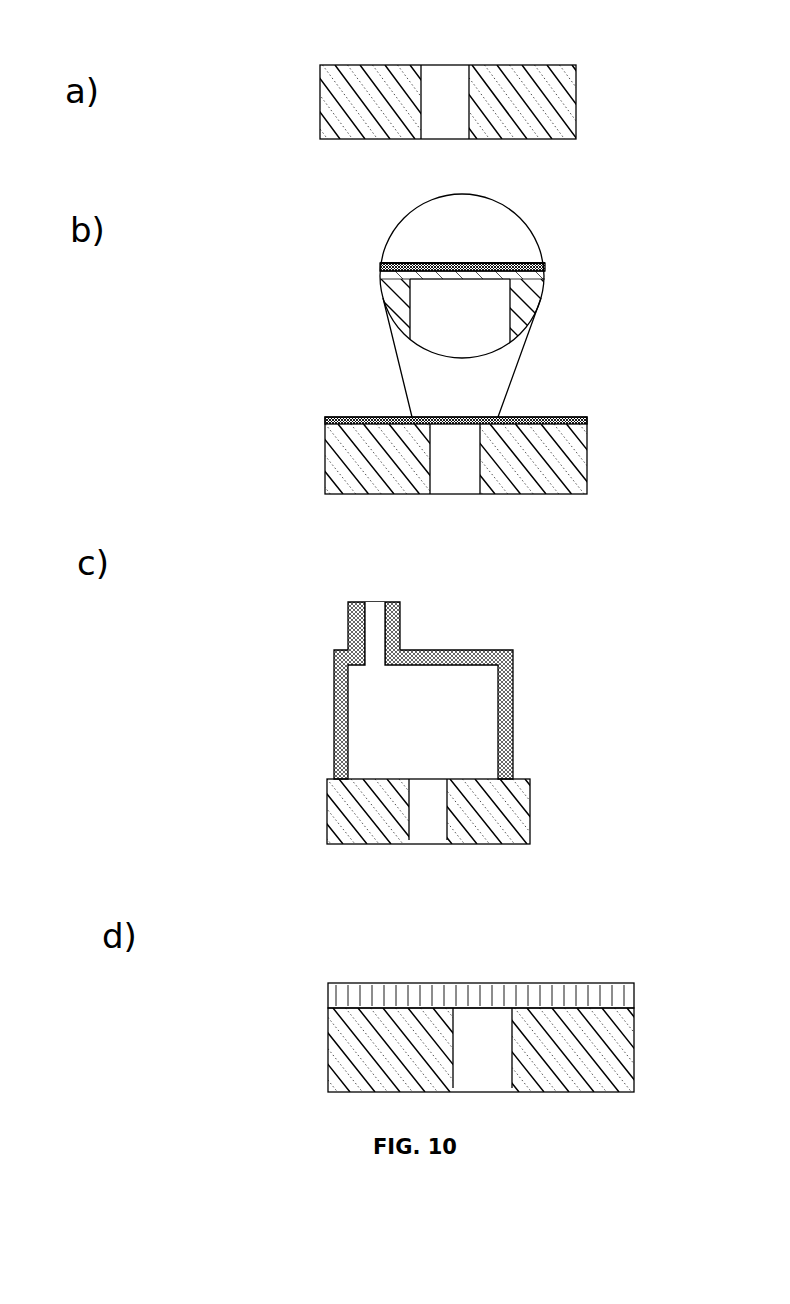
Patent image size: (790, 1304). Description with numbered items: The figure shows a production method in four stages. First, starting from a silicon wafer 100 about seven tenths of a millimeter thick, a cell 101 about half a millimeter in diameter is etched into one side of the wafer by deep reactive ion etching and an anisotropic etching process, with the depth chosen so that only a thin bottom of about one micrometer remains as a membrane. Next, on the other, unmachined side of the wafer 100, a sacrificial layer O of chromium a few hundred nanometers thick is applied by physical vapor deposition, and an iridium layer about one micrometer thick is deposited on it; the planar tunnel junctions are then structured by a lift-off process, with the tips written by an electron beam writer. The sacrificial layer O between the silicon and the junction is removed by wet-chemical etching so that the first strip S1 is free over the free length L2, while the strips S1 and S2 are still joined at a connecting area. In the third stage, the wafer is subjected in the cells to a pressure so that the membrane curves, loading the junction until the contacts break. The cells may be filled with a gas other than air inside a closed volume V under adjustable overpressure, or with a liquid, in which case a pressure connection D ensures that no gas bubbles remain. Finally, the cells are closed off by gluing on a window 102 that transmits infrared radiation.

The silicon wafer 100 is at (322, 118).
The cell 101 is at (447, 86).
The window 102 is at (473, 982).
The sacrificial layer O is at (414, 265).
The first strip S1 is at (496, 262).
The free length L2 is at (493, 299).
The second strip S2 is at (518, 262).
The pressure connection D is at (376, 620).
The volume V is at (442, 722).